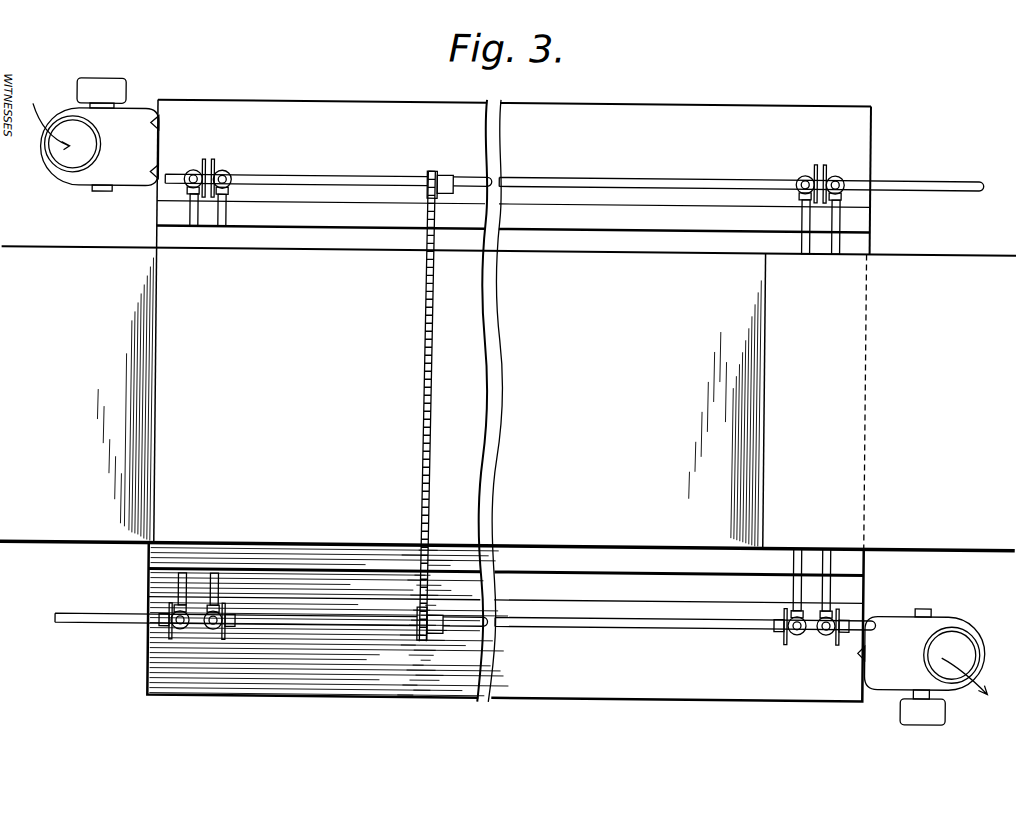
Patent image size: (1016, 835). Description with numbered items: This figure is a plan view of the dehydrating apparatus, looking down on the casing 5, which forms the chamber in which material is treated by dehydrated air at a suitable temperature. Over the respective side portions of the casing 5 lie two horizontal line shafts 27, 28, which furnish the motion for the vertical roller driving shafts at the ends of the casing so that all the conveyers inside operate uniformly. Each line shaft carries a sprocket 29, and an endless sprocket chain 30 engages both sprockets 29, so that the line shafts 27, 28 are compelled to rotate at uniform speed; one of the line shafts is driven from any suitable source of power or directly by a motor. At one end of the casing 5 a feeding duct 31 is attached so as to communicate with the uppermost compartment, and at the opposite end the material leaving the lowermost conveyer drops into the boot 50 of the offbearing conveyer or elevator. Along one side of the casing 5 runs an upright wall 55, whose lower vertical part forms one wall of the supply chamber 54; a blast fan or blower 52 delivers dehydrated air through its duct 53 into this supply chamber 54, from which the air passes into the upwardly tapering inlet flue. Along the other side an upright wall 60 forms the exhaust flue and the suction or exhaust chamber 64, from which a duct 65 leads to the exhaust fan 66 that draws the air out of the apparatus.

The casing 5 is at (508, 277).
The horizontal line shaft 27 is at (558, 178).
The horizontal line shaft 28 is at (539, 629).
The sprocket 29 is at (437, 174).
The endless sprocket chain 30 is at (423, 470).
The feeding duct 31 is at (825, 402).
The boot 50 is at (105, 399).
The blast fan or blower 52 is at (95, 134).
The duct 53 is at (146, 110).
The supply chamber 54 is at (286, 114).
The upright wall 55 is at (513, 216).
The upright wall 60 is at (505, 586).
The suction or exhaust chamber 64 is at (578, 694).
The duct 65 is at (873, 696).
The exhaust fan 66 is at (926, 651).